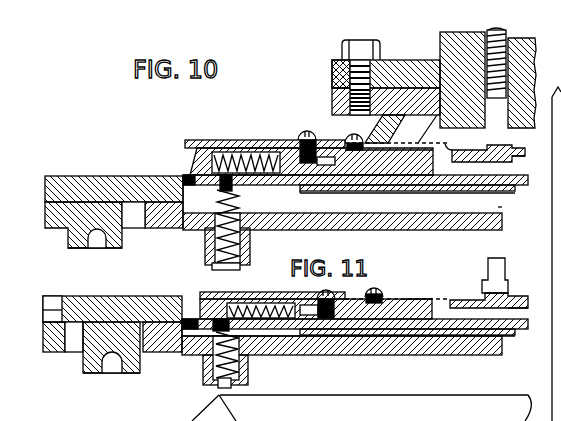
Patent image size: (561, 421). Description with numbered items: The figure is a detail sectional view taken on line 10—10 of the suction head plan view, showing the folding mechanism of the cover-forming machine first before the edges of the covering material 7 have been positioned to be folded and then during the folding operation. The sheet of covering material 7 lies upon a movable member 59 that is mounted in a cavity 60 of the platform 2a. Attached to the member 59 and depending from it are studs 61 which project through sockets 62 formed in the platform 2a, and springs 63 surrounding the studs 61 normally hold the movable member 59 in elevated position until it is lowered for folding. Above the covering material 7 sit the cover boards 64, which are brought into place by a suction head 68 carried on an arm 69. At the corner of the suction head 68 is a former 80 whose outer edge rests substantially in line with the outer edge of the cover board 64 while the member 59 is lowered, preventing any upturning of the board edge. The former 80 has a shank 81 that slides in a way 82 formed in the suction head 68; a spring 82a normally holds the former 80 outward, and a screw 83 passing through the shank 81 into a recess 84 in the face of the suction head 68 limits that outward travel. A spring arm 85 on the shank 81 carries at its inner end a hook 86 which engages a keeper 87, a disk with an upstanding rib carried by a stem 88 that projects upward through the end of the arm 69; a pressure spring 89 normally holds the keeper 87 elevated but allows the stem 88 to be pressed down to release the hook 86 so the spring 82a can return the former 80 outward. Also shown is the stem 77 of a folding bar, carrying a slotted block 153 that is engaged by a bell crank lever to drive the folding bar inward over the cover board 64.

In FIG. 10, the section line 10 is at (553, 70).
In FIG. 10, the platform 2a is at (503, 228).
In FIG. 11, the platform 2a is at (504, 355).
In FIG. 10, the covering material 7 is at (182, 178).
In FIG. 11, the covering material 7 is at (336, 330).
In FIG. 10, the movable member 59 is at (422, 188).
In FIG. 11, the movable member 59 is at (430, 341).
In FIG. 10, the cavity 60 is at (498, 207).
In FIG. 10, the studs 61 is at (212, 266).
In FIG. 11, the studs 61 is at (216, 384).
In FIG. 10, the sockets 62 is at (207, 238).
In FIG. 11, the sockets 62 is at (205, 361).
In FIG. 10, the springs 63 is at (240, 210).
In FIG. 11, the springs 63 is at (246, 362).
In FIG. 10, the cover boards 64 is at (220, 176).
In FIG. 11, the cover boards 64 is at (222, 320).
In FIG. 10, the suction head 68 is at (366, 186).
In FIG. 11, the suction head 68 is at (375, 341).
In FIG. 10, the arm 69 is at (440, 62).
In FIG. 10, the stem 77 is at (100, 185).
In FIG. 11, the stem 77 is at (105, 306).
In FIG. 10, the former 80 is at (200, 147).
In FIG. 11, the former 80 is at (200, 293).
In FIG. 10, the shank 81 is at (290, 148).
In FIG. 11, the shank 81 is at (283, 299).
In FIG. 10, the way 82 is at (228, 152).
In FIG. 11, the way 82 is at (258, 303).
In FIG. 10, the spring 82a is at (246, 163).
In FIG. 11, the spring 82a is at (261, 311).
In FIG. 10, the screw 83 is at (306, 131).
In FIG. 11, the screw 83 is at (317, 293).
In FIG. 10, the recess 84 is at (350, 142).
In FIG. 11, the recess 84 is at (366, 295).
In FIG. 10, the spring arm 85 is at (413, 150).
In FIG. 11, the spring arm 85 is at (411, 299).
In FIG. 10, the hook 86 is at (470, 150).
In FIG. 11, the hook 86 is at (468, 300).
In FIG. 10, the keeper 87 is at (524, 155).
In FIG. 11, the keeper 87 is at (523, 302).
In FIG. 10, the stem 88 is at (508, 34).
In FIG. 11, the stem 88 is at (506, 270).
In FIG. 10, the pressure spring 89 is at (489, 33).
In FIG. 10, the slotted blocks 153 is at (72, 246).
In FIG. 11, the slotted blocks 153 is at (86, 358).